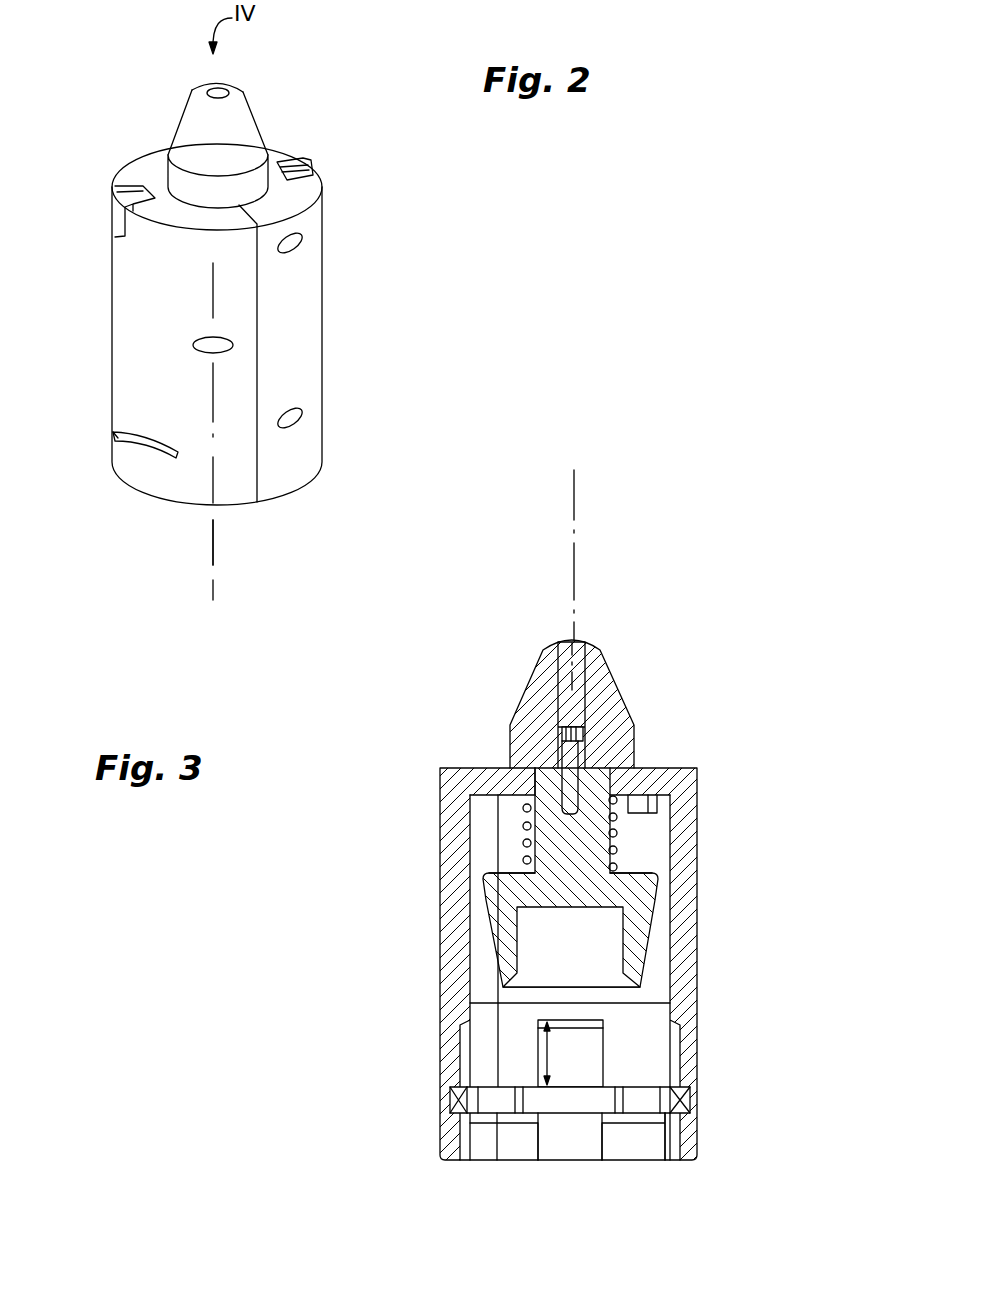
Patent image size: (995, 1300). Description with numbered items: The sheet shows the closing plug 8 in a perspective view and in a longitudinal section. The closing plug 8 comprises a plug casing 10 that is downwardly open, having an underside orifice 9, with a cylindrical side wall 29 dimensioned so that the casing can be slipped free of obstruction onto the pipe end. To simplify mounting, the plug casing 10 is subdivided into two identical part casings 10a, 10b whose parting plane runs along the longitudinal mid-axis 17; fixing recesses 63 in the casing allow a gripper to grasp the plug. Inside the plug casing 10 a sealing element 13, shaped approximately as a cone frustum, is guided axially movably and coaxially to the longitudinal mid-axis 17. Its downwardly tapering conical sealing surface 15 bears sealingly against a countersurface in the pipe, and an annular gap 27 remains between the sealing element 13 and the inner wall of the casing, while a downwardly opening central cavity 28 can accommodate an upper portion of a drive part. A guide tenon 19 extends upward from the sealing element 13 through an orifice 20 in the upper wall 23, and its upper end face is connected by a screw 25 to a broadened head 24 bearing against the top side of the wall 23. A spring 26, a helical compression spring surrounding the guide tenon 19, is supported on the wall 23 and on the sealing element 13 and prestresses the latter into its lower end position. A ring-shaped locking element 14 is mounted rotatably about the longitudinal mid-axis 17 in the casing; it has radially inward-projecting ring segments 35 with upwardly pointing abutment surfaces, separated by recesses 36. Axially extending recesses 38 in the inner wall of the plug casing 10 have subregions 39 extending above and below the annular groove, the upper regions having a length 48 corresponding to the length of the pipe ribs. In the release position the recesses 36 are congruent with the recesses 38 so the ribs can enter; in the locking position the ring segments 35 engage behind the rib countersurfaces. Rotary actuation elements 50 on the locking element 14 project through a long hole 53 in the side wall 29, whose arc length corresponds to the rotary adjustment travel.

In FIG. 2, the closing plug 8 is at (302, 373).
In FIG. 3, the underside orifice 9 is at (675, 1142).
In FIG. 2, the plug casing 10 is at (303, 328).
In FIG. 3, the plug casing 10 is at (700, 799).
In FIG. 2, the part casing 10a is at (305, 270).
In FIG. 3, the part casing 10a is at (678, 983).
In FIG. 2, the part casing 10b is at (148, 320).
In FIG. 3, the part casing 10b is at (450, 910).
In FIG. 3, the sealing element 13 is at (607, 754).
In FIG. 3, the locking element 14 is at (494, 1098).
In FIG. 3, the sealing surface 15 is at (490, 937).
In FIG. 2, the longitudinal mid-axis 17 is at (212, 568).
In FIG. 3, the longitudinal mid-axis 17 is at (574, 500).
In FIG. 3, the guide tenon 19 is at (582, 842).
In FIG. 3, the orifice 20 is at (608, 792).
In FIG. 3, the upper wall 23 is at (463, 790).
In FIG. 3, the head 24 is at (608, 655).
In FIG. 3, the screw 25 is at (571, 755).
In FIG. 3, the spring 26 is at (522, 822).
In FIG. 3, the annular gap 27 is at (474, 890).
In FIG. 3, the central cavity 28 is at (574, 943).
In FIG. 3, the side wall 29 is at (452, 988).
In FIG. 3, the ring segments 35 is at (545, 1102).
In FIG. 3, the recess 36 is at (637, 1108).
In FIG. 3, the recesses 38 is at (571, 1143).
In FIG. 3, the recesses 39 is at (578, 1052).
In FIG. 3, the length 48 is at (540, 1060).
In FIG. 2, the rotary actuation element 50 is at (113, 435).
In FIG. 2, the long hole 53 is at (148, 456).
In FIG. 2, the fixing recess 63 is at (313, 168).